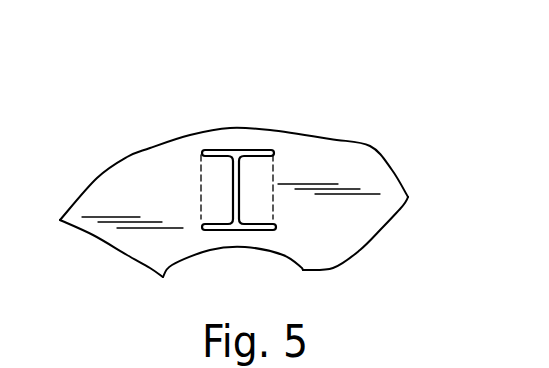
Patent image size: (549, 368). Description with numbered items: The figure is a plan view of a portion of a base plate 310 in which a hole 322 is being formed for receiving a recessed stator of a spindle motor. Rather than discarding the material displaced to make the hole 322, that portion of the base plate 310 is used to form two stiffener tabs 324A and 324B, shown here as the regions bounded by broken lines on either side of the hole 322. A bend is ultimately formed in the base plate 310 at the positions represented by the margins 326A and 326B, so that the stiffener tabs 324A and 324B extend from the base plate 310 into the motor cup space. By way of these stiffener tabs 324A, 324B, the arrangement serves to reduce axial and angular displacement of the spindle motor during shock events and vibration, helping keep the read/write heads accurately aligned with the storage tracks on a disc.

The cover body 310 is at (335, 175).
The hole 322 is at (239, 151).
The stiffener tab 324A is at (215, 180).
The stiffener tab 324B is at (265, 178).
The margin 326A is at (200, 202).
The margin 326B is at (275, 203).